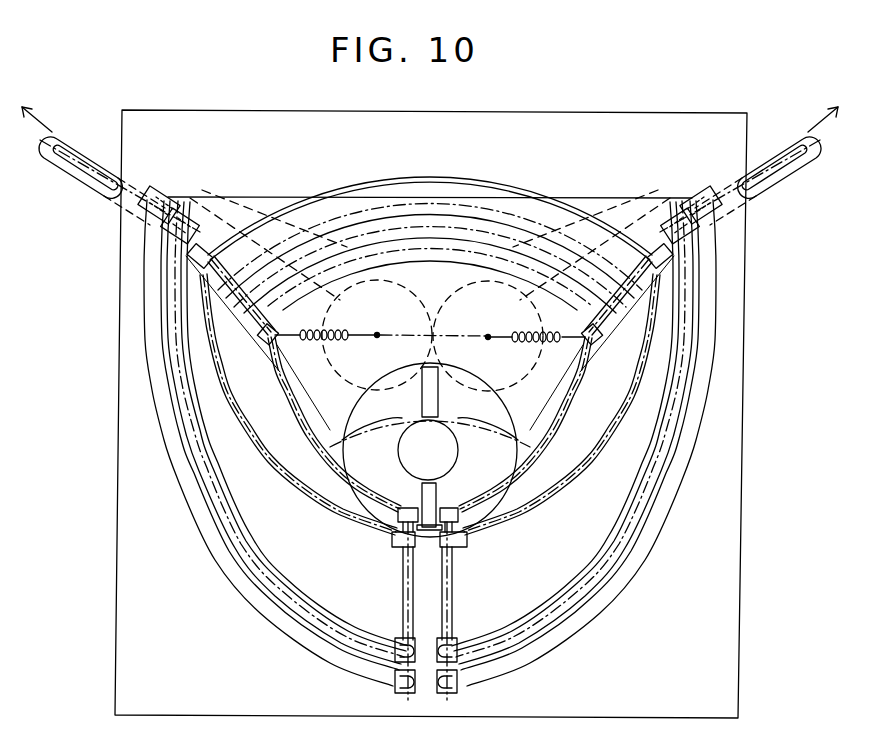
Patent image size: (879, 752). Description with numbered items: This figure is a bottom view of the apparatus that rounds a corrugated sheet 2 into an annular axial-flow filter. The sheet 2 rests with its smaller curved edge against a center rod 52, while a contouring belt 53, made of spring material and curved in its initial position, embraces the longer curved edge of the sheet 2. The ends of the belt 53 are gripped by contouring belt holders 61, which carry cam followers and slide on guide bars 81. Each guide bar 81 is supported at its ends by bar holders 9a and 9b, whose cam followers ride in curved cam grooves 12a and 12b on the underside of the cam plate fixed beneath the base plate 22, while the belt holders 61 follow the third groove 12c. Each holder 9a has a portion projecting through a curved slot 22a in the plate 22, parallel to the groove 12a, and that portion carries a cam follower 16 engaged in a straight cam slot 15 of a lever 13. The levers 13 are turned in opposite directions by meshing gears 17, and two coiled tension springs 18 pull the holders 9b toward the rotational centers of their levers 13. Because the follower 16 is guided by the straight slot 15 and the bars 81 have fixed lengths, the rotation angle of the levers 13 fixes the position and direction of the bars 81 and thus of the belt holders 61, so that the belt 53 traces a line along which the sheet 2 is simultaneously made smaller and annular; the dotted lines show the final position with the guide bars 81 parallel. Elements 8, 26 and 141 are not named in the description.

The corrugated sheet 2 is at (229, 407).
The guide rods 8 is at (403, 603).
The guide bar holder 9a is at (190, 200).
The guide bar holder 9b is at (276, 325).
The curved cam groove 12a is at (228, 516).
The curved cam groove 12b is at (332, 470).
The curved cam groove 12c is at (245, 422).
The lever 13 is at (72, 147).
The straight cam slot 15 is at (95, 160).
The cam follower 16 is at (148, 216).
The meshing gear 17 is at (415, 295).
The coiled tension spring 18 is at (312, 332).
The base plate 22 is at (148, 118).
The curved slot 22a is at (146, 291).
The belt 26 is at (500, 498).
The center rod 52 is at (406, 463).
The contouring belt 53 is at (362, 185).
The contouring belt holder 61 is at (215, 225).
The guide bar 81 is at (232, 268).
The pivot 141 is at (376, 332).